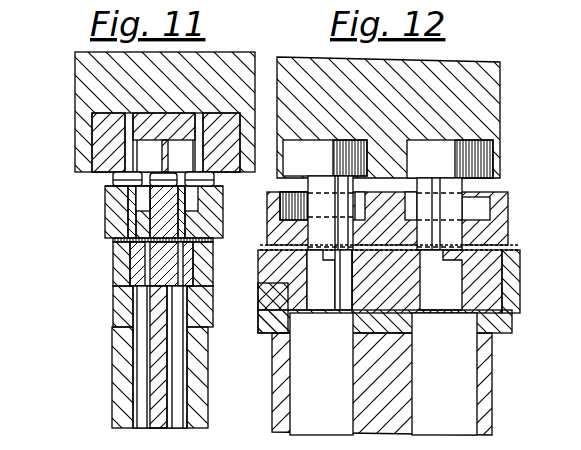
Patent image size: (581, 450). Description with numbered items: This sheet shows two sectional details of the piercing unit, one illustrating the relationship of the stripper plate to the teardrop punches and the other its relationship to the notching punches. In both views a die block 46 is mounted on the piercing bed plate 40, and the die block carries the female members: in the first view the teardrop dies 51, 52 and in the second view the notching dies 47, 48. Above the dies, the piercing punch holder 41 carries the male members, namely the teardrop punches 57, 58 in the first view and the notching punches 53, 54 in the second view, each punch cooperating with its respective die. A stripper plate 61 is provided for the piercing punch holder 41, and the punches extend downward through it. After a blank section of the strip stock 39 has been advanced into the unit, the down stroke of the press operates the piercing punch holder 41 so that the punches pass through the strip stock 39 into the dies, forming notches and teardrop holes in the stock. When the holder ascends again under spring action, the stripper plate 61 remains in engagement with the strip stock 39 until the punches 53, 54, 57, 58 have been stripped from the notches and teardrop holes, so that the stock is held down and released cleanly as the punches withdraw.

In FIG. 11, the piercing punch holder 41 is at (85, 78).
In FIG. 12, the piercing punch holder 41 is at (490, 88).
In FIG. 11, the teardrop punch 58 is at (143, 180).
In FIG. 11, the stripper plate 61 is at (115, 208).
In FIG. 12, the stripper plate 61 is at (507, 213).
In FIG. 11, the teardrop punch 57 is at (200, 203).
In FIG. 11, the strip stock 39 is at (118, 243).
In FIG. 12, the strip stock 39 is at (352, 260).
In FIG. 11, the teardrop die 52 is at (128, 262).
In FIG. 11, the teardrop die 51 is at (190, 258).
In FIG. 11, the die block 46 is at (113, 297).
In FIG. 12, the die block 46 is at (513, 300).
In FIG. 11, the piercing bed plate 40 is at (122, 363).
In FIG. 12, the piercing bed plate 40 is at (275, 363).
In FIG. 12, the notching punch 54 is at (312, 183).
In FIG. 12, the notching punch 53 is at (452, 202).
In FIG. 12, the notching die 48 is at (280, 283).
In FIG. 12, the notching die 47 is at (493, 265).